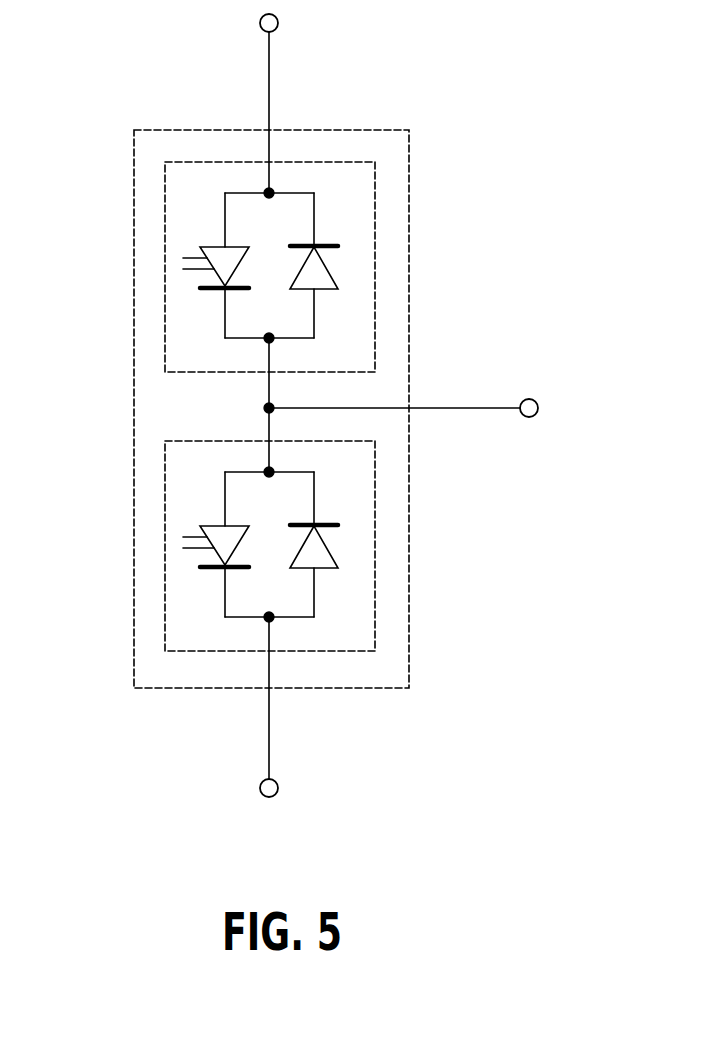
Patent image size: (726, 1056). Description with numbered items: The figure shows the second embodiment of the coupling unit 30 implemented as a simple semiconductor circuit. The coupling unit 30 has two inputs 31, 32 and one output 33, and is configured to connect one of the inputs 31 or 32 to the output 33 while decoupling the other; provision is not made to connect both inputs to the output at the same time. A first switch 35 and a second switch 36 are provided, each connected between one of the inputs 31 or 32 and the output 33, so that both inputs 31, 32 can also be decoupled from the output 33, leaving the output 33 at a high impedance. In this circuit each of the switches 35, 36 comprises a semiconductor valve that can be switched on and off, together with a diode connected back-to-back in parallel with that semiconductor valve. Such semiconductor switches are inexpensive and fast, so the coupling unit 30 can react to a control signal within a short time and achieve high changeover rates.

The coupling unit 30 is at (409, 190).
The first input 31 is at (278, 21).
The second input 32 is at (278, 786).
The output 33 is at (530, 398).
The first switch 35 is at (165, 246).
The second switch 36 is at (165, 548).